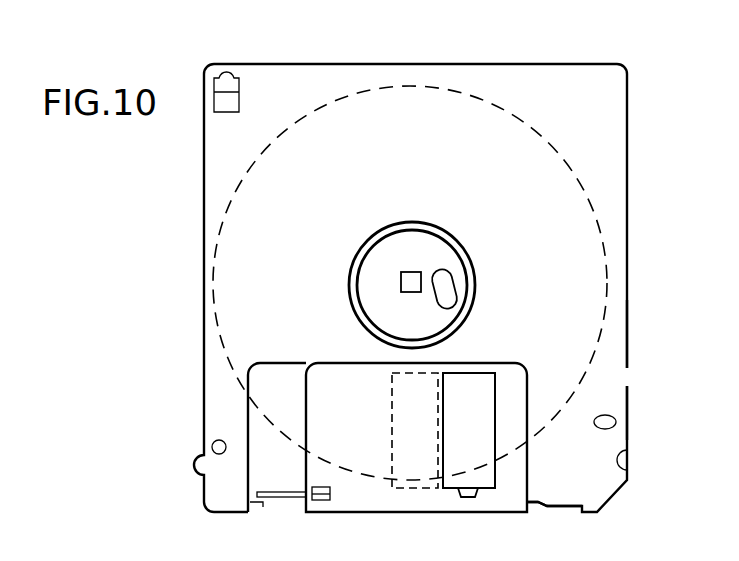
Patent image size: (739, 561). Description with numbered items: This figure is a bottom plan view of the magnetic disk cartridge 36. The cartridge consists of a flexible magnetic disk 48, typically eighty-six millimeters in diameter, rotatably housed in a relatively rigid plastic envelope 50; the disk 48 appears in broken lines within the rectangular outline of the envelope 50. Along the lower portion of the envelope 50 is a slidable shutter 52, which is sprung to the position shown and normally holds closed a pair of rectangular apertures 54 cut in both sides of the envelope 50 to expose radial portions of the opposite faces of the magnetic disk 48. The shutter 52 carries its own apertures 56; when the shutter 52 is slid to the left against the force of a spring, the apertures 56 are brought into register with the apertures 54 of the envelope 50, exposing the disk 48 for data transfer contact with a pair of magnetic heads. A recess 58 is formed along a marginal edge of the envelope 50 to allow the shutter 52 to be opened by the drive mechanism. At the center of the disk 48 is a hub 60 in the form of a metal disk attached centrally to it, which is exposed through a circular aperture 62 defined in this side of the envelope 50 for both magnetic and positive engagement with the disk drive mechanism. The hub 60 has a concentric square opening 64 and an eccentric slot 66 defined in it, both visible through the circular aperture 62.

The magnetic disk cartridge 36 is at (633, 157).
The flexible magnetic disk 48 is at (553, 423).
The envelope 50 is at (620, 364).
The shutter 52 is at (360, 502).
The rectangular apertures 54 is at (390, 467).
The shutter apertures 56 is at (492, 477).
The recess 58 is at (532, 503).
The hub 60 is at (420, 240).
The circular aperture 62 is at (350, 284).
The square opening 64 is at (404, 272).
The eccentric slot 66 is at (447, 285).